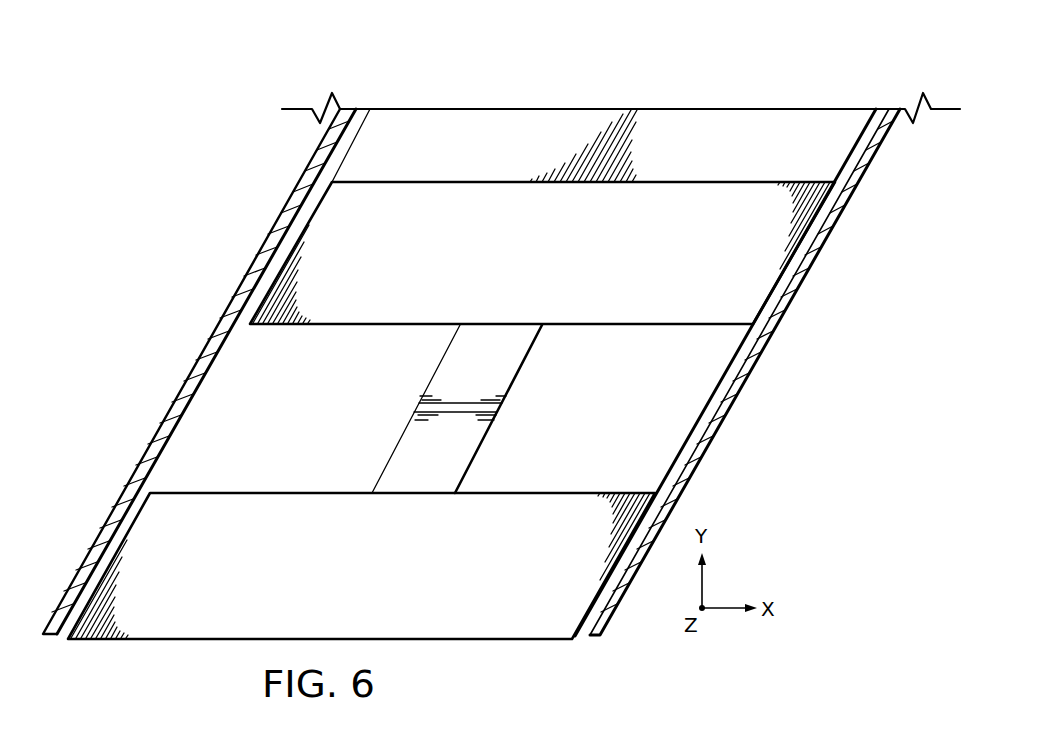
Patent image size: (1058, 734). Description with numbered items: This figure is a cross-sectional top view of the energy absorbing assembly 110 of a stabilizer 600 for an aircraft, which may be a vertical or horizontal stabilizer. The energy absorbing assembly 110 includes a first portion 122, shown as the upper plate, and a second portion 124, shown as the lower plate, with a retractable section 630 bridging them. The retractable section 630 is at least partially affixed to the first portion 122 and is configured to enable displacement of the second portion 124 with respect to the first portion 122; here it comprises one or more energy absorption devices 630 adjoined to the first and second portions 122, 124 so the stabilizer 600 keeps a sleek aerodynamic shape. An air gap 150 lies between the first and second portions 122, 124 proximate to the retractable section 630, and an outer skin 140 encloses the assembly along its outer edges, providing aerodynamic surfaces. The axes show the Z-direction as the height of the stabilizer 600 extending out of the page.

The stabilizer 600 is at (772, 66).
The energy absorbing assembly 110 is at (851, 278).
The first portion 122 is at (432, 191).
The second portion 124 is at (512, 629).
The outer skin 140 is at (763, 357).
The air gap 150 is at (702, 426).
The retractable section 630 is at (382, 413).